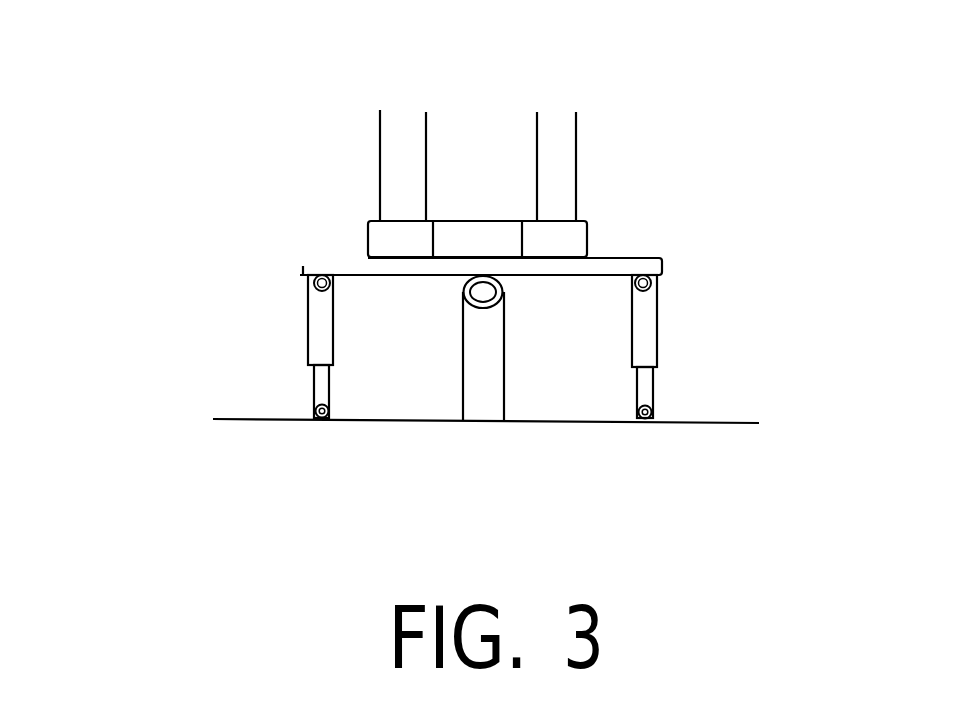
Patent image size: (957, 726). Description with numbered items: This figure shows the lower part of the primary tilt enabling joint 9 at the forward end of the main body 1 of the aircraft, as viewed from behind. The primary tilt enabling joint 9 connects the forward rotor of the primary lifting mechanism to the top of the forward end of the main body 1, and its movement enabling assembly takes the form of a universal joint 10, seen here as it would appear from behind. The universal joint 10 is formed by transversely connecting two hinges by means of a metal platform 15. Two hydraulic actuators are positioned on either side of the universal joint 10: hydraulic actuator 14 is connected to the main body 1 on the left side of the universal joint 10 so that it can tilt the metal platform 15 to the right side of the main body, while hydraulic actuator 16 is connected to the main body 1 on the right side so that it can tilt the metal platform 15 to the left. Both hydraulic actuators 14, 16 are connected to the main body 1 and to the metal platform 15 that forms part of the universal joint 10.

The main body 1 is at (738, 425).
The primary tilt enabling joint 9 is at (263, 205).
The universal joint 10 is at (448, 290).
The hydraulic actuator 14 is at (195, 337).
The metal platform 15 is at (303, 266).
The hydraulic actuator 16 is at (733, 335).